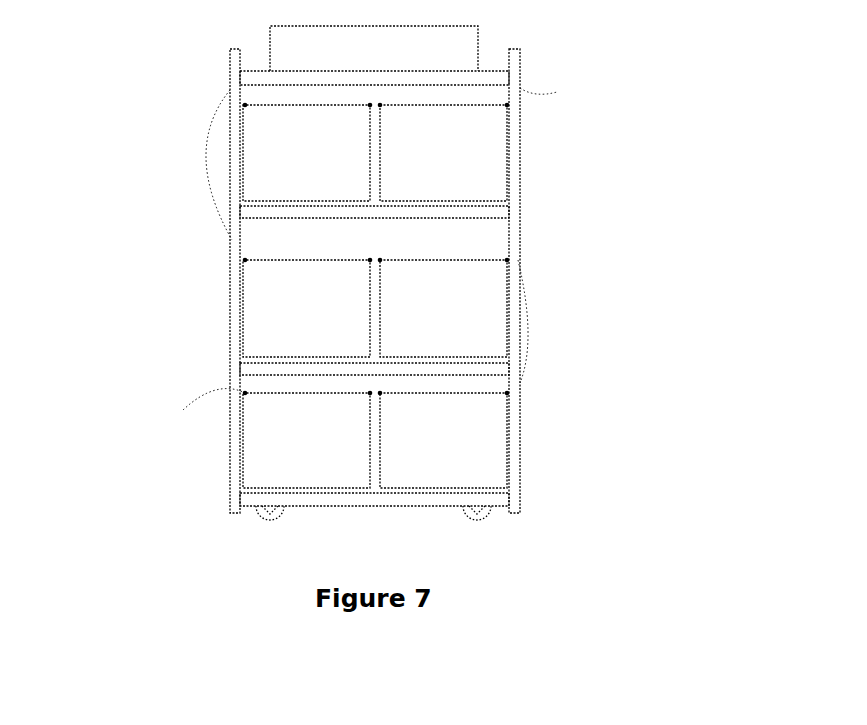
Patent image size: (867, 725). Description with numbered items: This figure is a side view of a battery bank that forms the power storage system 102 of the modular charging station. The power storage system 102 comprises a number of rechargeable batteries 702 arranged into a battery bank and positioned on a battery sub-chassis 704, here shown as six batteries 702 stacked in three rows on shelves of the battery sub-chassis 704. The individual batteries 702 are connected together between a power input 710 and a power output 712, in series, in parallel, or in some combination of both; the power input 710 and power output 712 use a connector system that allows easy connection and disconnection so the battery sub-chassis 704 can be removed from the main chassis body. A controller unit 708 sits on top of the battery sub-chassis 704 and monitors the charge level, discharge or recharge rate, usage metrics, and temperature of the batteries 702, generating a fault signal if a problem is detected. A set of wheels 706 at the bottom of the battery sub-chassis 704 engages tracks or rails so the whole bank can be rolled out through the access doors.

The power storage system 102 is at (150, 88).
The rechargeable batteries 702 is at (262, 283).
The battery sub-chassis 704 is at (235, 345).
The wheels 706 is at (262, 520).
The controller unit 708 is at (467, 42).
The power input 710 is at (170, 393).
The power output 712 is at (554, 106).